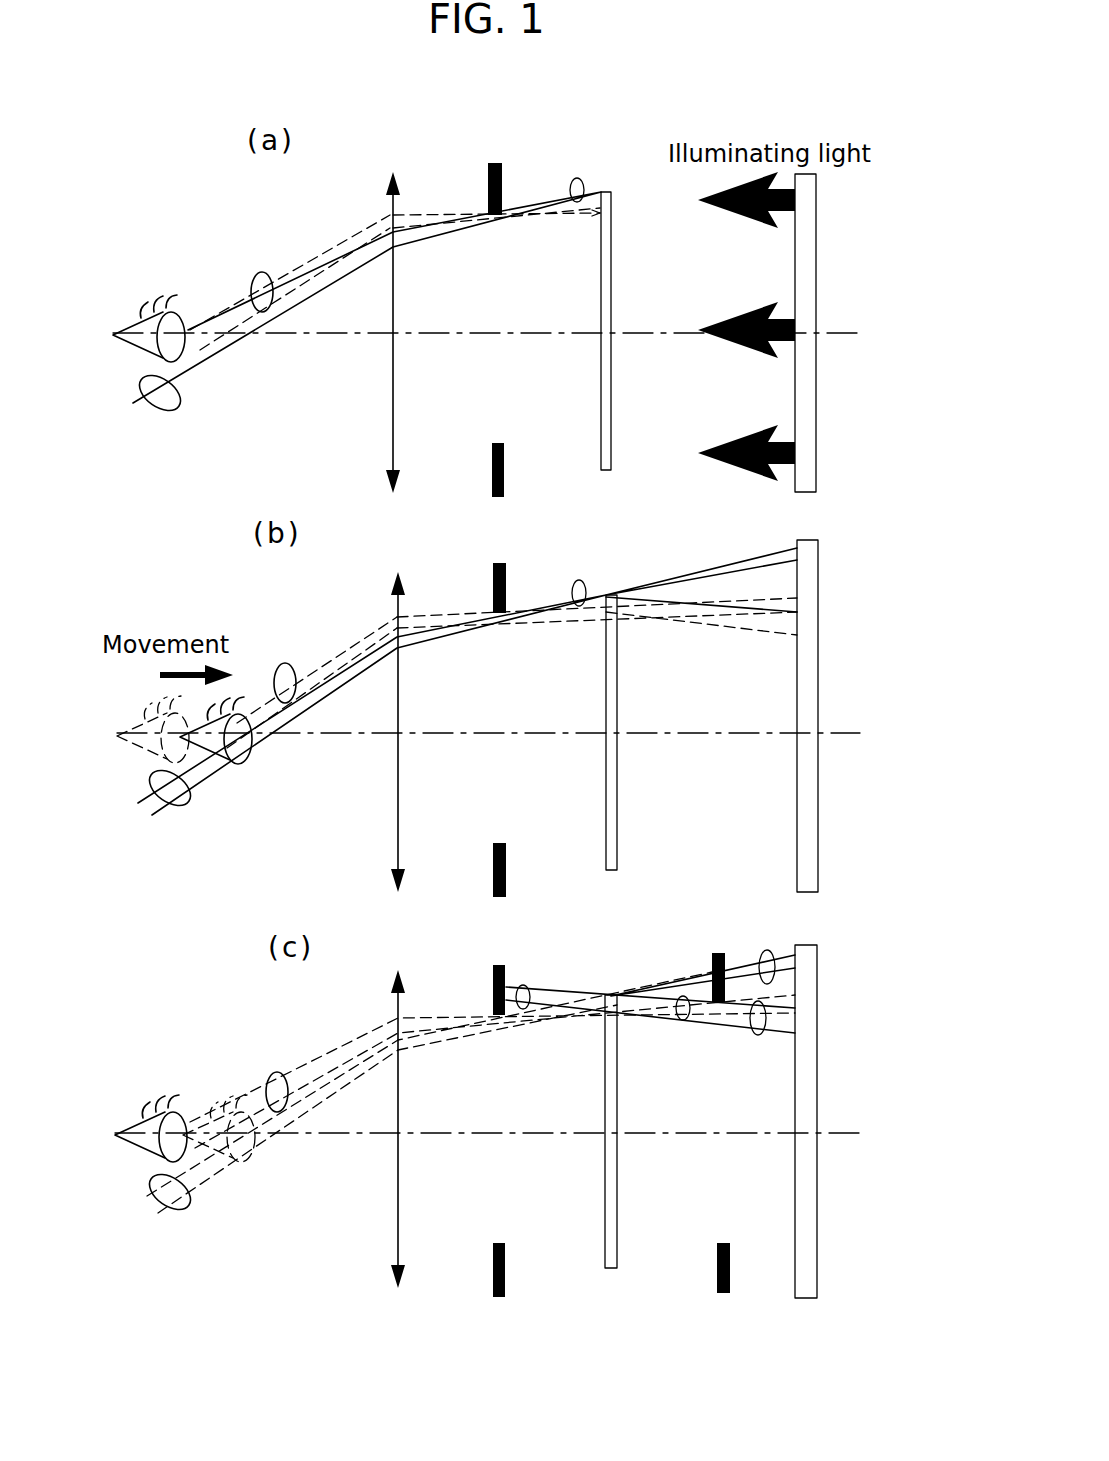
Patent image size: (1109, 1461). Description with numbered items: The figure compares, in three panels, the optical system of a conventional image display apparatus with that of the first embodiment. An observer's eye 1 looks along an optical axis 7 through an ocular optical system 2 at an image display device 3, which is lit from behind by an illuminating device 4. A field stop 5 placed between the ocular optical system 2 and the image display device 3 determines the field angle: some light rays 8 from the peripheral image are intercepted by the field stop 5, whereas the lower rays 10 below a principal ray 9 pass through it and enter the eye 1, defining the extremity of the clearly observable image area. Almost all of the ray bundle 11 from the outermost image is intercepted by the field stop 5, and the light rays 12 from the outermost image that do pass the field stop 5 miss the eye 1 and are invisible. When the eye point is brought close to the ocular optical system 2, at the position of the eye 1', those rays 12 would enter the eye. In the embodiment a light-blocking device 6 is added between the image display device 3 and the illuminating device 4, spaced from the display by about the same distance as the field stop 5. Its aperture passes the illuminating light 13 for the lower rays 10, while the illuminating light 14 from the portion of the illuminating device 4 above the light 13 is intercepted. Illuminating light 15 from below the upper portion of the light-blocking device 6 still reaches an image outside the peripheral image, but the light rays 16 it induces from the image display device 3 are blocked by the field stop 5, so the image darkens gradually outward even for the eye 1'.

The observer's eye 1 is at (151, 678).
The observer's eye when brought close to the ocular optical system 1' is at (234, 929).
The ocular optical system 2 is at (392, 397).
The image display device 3 is at (613, 287).
The illuminating device 4 is at (817, 267).
The field stop 5 is at (487, 175).
The light-blocking device 6 is at (710, 953).
The optical axis 7 is at (458, 335).
The light rays from a peripheral image which are intercepted by the field stop 8 is at (522, 198).
The principal ray from the peripheral image 9 is at (418, 217).
The lower rays from the peripheral image 10 is at (263, 268).
The light rays from the outermost image 11 is at (581, 178).
The light rays from the outermost image which pass through the field stop 12 is at (175, 412).
The illuminating light for the lower rays from the peripheral image 13 is at (677, 1000).
The illuminating light emitted from a portion of the illuminating device above the l 14 is at (760, 948).
The illuminating light emitted from a portion of the illuminating device below the u 15 is at (757, 1038).
The light rays induced to emanate from the image display device by the illuminating 16 is at (527, 980).